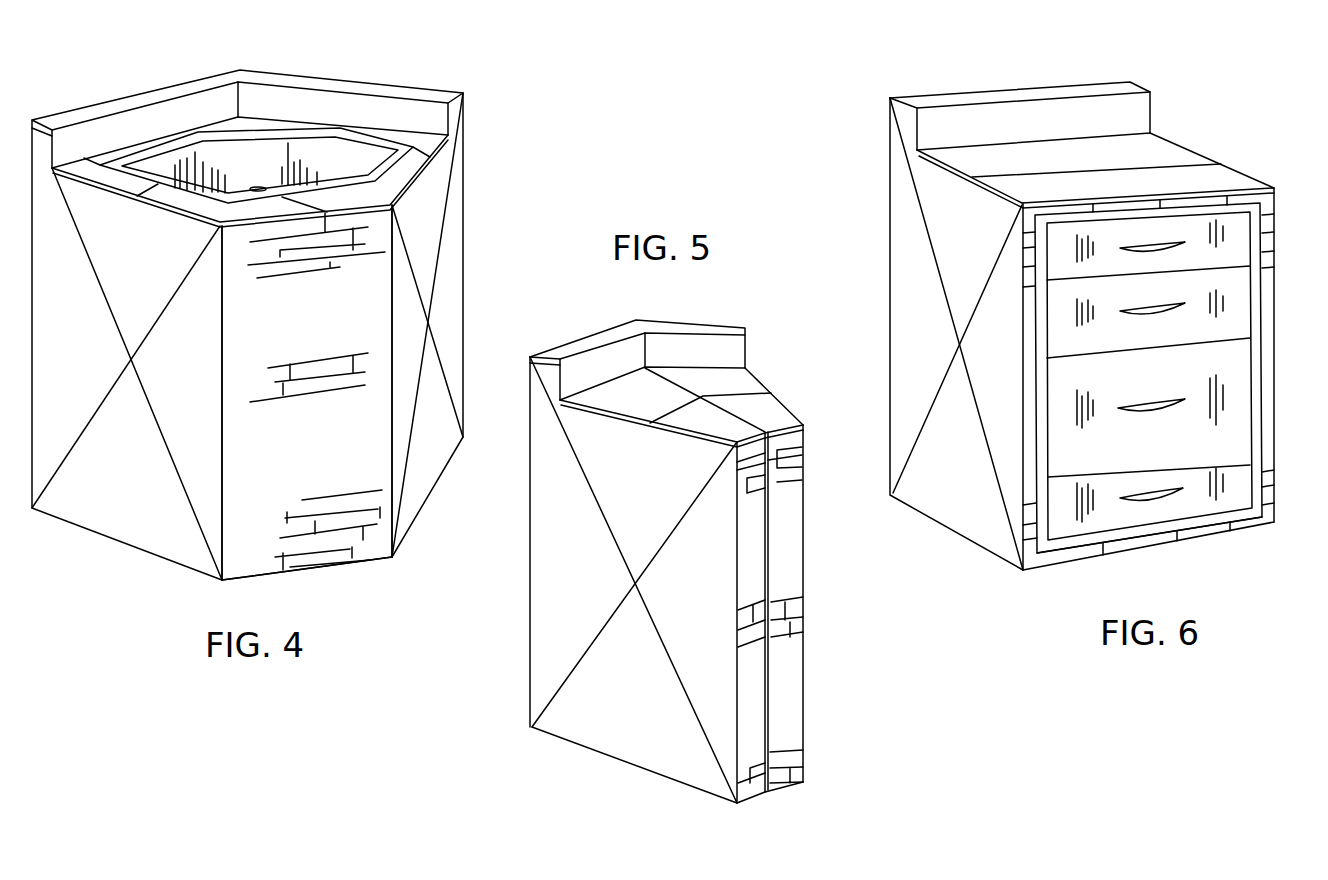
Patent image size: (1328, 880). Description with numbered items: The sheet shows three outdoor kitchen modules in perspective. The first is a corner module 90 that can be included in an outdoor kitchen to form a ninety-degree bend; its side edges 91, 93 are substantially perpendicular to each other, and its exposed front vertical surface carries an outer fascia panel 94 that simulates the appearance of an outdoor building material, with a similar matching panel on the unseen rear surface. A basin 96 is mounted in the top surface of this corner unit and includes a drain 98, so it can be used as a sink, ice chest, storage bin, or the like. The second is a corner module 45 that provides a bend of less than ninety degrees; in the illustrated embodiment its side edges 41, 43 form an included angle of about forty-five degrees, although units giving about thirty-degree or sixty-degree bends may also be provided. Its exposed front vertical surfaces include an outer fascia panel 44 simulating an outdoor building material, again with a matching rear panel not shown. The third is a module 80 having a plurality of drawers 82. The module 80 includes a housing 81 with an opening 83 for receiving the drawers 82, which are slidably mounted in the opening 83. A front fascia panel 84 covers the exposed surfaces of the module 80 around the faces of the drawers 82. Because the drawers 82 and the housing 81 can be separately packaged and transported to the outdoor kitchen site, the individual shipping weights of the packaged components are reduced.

In FIG. 4, the corner module 90 is at (338, 72).
In FIG. 4, the side edge 91 is at (109, 178).
In FIG. 4, the side edge 93 is at (408, 165).
In FIG. 4, the outer fascia panel 94 is at (320, 333).
In FIG. 4, the basin 96 is at (353, 152).
In FIG. 4, the drain 98 is at (262, 190).
In FIG. 5, the corner module 45 is at (724, 315).
In FIG. 5, the side edge 41 is at (663, 428).
In FIG. 5, the side edge 43 is at (757, 387).
In FIG. 5, the outer fascia panel 44 is at (792, 555).
In FIG. 6, the module 80 is at (1182, 135).
In FIG. 6, the housing 81 is at (890, 167).
In FIG. 6, the drawers 82 is at (1243, 467).
In FIG. 6, the opening 83 is at (1230, 527).
In FIG. 6, the front fascia panel 84 is at (1148, 548).